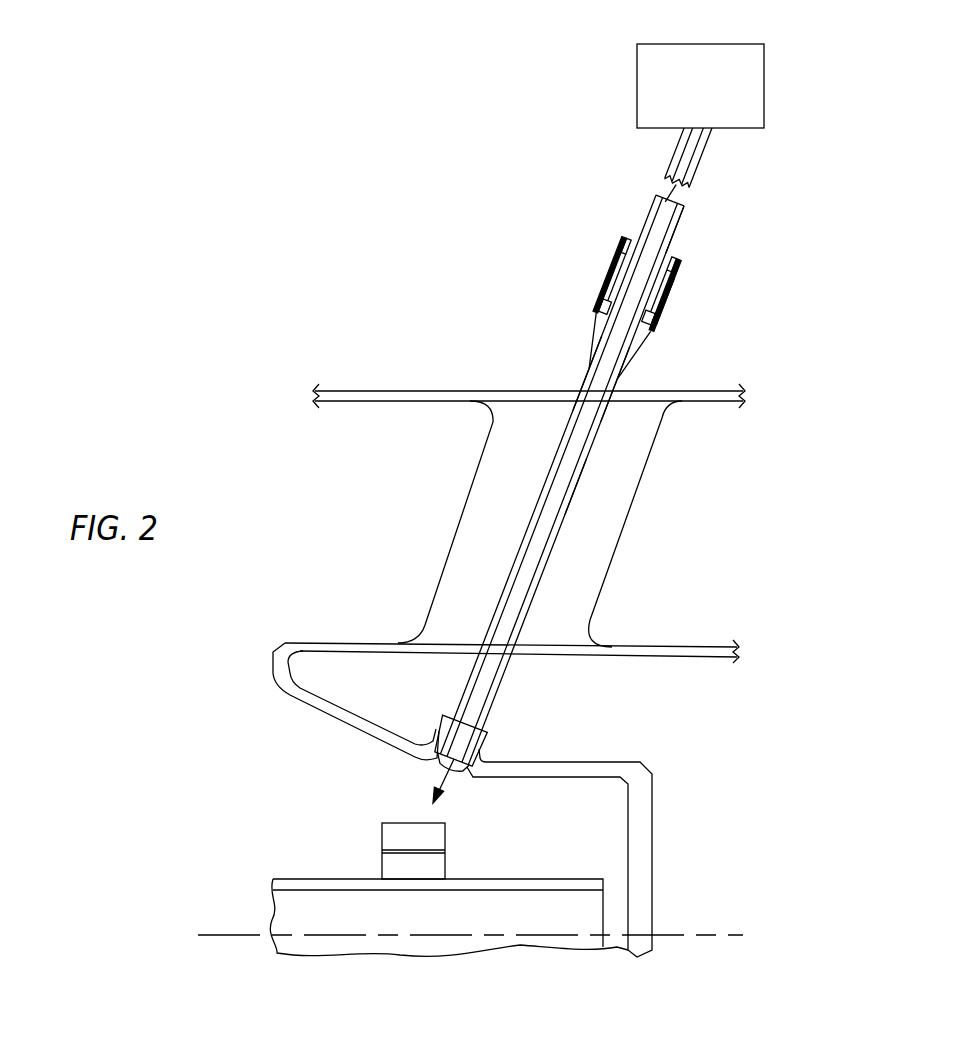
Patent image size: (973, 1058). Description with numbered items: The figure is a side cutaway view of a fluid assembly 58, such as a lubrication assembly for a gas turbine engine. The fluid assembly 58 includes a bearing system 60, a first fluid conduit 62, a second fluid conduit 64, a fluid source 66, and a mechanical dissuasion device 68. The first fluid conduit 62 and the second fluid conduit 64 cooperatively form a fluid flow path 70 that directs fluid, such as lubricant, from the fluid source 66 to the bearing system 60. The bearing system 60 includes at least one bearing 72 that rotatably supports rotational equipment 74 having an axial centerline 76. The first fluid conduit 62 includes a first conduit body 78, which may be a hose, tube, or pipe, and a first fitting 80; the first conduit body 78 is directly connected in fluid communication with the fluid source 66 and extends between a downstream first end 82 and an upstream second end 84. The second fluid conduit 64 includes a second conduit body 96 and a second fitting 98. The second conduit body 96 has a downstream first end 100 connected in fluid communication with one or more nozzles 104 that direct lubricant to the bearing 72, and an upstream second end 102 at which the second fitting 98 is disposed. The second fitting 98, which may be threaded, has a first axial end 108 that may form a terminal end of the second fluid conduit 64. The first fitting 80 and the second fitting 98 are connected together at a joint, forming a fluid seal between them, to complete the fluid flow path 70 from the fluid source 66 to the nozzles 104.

The fluid assembly 58 is at (862, 352).
The bearing system 60 is at (305, 746).
The first fluid conduit 62 is at (701, 219).
The second fluid conduit 64 is at (578, 348).
The fluid source 66 is at (765, 86).
The mechanical dissuasion device 68 is at (618, 250).
The fluid flow path 70 is at (557, 493).
The bearing 72 is at (366, 830).
The rotational equipment 74 is at (313, 879).
The axial centerline 76 is at (733, 934).
The first conduit body 78 is at (677, 228).
The first fitting 80 is at (627, 237).
The first end 82 is at (681, 314).
The second end 84 is at (726, 142).
The second conduit body 96 is at (582, 467).
The second fitting 98 is at (650, 330).
The first end 100 is at (502, 720).
The second end 102 is at (586, 284).
The nozzle 104 is at (483, 748).
The first axial end 108 is at (672, 290).